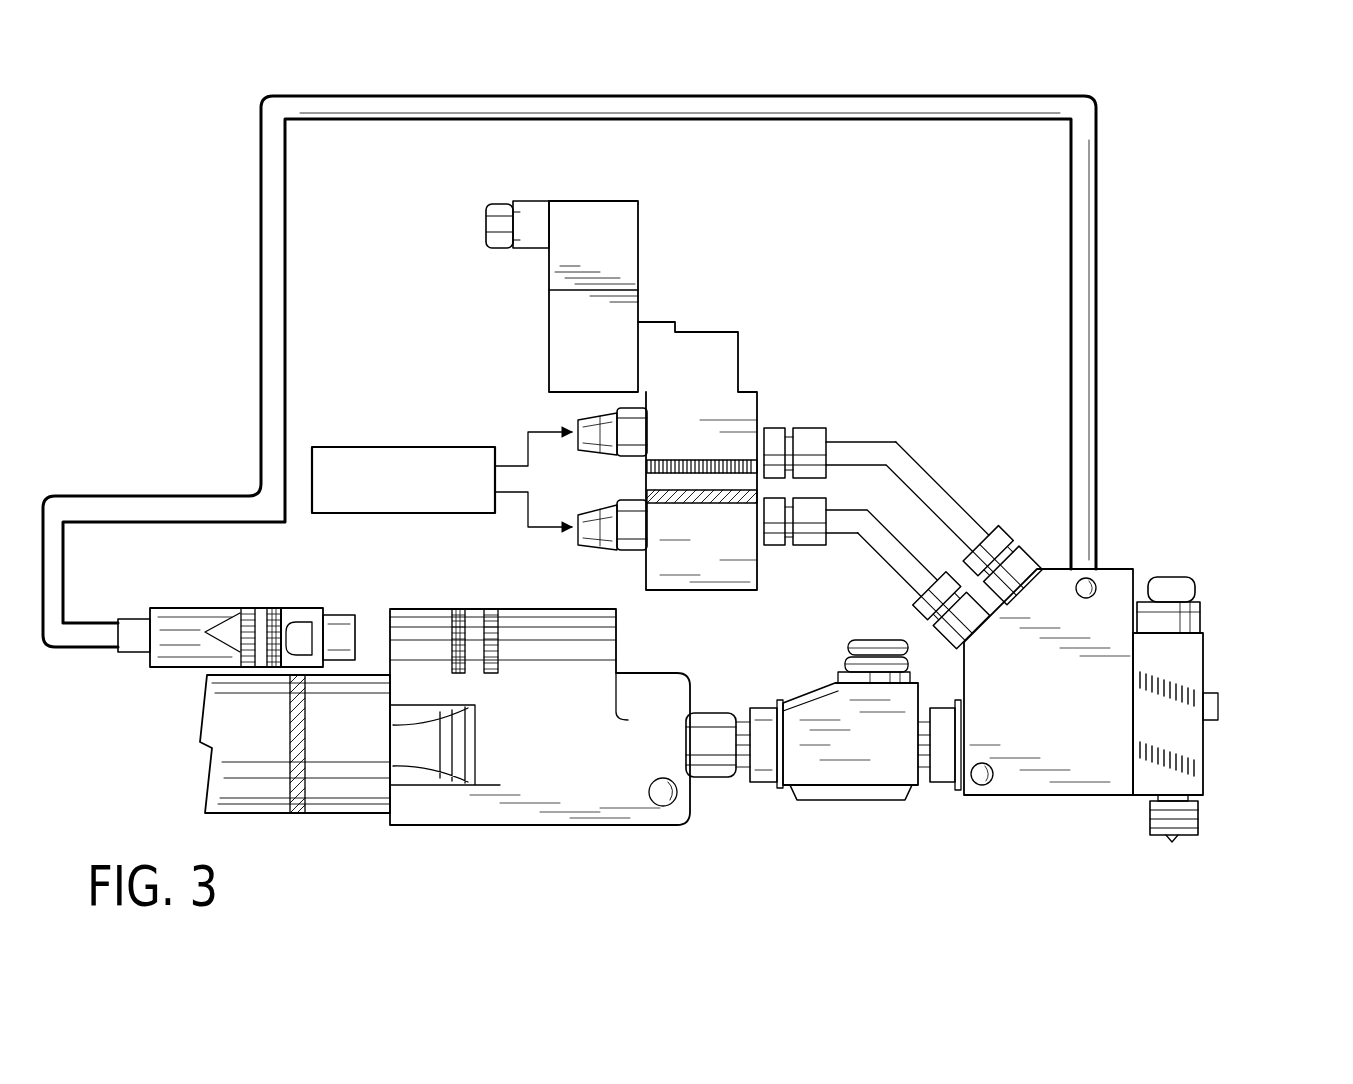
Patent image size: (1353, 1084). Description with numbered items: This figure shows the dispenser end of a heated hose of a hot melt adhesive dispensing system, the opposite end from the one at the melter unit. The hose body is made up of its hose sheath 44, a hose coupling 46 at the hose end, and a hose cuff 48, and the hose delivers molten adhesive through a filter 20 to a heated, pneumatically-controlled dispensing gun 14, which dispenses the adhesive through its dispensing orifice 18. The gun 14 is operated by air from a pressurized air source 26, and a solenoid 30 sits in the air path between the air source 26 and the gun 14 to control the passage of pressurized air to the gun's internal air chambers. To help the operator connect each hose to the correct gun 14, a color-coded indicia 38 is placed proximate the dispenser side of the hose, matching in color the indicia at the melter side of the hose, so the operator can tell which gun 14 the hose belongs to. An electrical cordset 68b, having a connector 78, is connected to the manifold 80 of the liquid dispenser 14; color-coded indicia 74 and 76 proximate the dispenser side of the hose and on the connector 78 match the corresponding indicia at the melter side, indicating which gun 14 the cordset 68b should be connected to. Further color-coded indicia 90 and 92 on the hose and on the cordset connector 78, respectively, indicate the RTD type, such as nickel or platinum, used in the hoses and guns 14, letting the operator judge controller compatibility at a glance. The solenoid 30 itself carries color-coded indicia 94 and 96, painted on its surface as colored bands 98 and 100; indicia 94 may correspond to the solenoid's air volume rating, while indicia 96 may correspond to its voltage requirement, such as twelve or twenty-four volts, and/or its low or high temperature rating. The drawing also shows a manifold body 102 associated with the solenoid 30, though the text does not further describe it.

The dispensing gun 14 is at (1256, 652).
The dispensing orifice 18 is at (1174, 842).
The filter 20 is at (878, 757).
The pressurized air source 26 is at (360, 447).
The solenoid 30 is at (660, 282).
The color-coded indicia 38 is at (312, 738).
The hose sheath 44 is at (255, 815).
The hose coupling 46 is at (705, 712).
The hose cuff 48 is at (560, 752).
The electrical cordset 68b is at (150, 592).
The color-coded indicia 74 is at (443, 635).
The color-coded indicia 76 is at (294, 631).
The connector 78 is at (178, 668).
The manifold 80 is at (1066, 725).
The color-coded indicia 90 is at (506, 653).
The color-coded indicia 92 is at (230, 633).
The color-coded indicia 94 is at (718, 453).
The color-coded indicia 96 is at (673, 509).
The colored band 98 is at (683, 460).
The colored band 100 is at (727, 504).
The manifold 102 is at (716, 338).